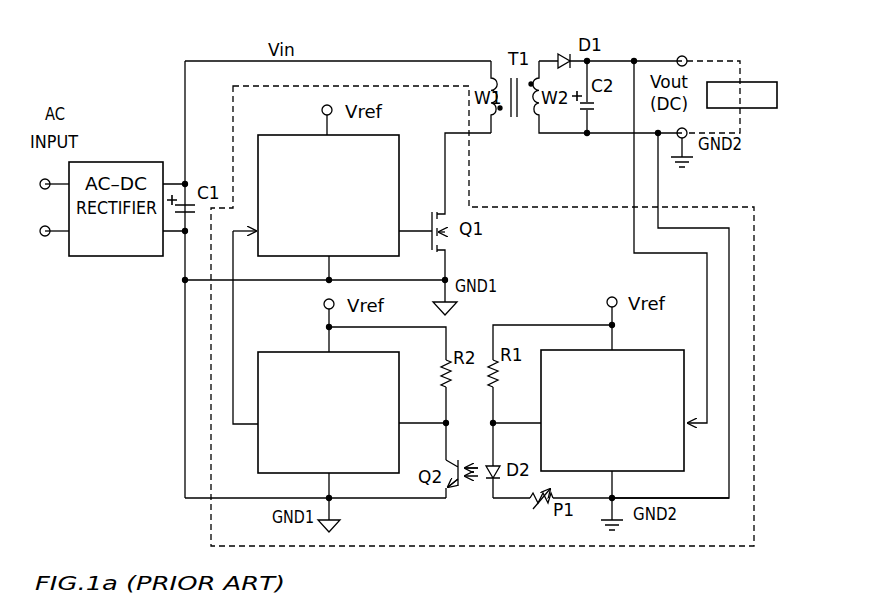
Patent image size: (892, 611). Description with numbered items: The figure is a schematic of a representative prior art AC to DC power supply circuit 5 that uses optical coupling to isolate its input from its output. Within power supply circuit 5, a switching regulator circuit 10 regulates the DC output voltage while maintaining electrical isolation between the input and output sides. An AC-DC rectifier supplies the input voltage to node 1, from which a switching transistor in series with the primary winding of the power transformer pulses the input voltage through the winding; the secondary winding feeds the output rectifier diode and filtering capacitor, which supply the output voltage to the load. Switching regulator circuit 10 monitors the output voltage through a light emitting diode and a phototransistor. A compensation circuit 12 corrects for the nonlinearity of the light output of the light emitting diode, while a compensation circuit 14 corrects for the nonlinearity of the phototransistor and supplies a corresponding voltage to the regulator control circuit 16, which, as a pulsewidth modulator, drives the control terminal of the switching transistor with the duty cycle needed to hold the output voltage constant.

The node 1 (input voltage node) 1 is at (471, 58).
The AC to DC power supply circuit 5 is at (723, 55).
The switching regulator circuit 10 is at (211, 397).
The compensation circuit 12 is at (612, 410).
The compensation circuit 14 is at (328, 412).
The regulator control circuit 16 is at (328, 195).